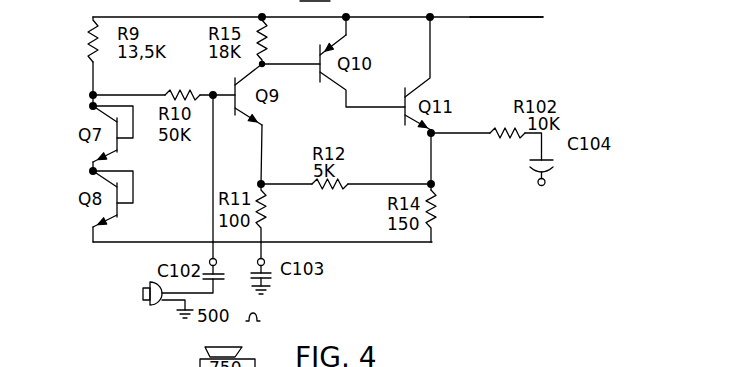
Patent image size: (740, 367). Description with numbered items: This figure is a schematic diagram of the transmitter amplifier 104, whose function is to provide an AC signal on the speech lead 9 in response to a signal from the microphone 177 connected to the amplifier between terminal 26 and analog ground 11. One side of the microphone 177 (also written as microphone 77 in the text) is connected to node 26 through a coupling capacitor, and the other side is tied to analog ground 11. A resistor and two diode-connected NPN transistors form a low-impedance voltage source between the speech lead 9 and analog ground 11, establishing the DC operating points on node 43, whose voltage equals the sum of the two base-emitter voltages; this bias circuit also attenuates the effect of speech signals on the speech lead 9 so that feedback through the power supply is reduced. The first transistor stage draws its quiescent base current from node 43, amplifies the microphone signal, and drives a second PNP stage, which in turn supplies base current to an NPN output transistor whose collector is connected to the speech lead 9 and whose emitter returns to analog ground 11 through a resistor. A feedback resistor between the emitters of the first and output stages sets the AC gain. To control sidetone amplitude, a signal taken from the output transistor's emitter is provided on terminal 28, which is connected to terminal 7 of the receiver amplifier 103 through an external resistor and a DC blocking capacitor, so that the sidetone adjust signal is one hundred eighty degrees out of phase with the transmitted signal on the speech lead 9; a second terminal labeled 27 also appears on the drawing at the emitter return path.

The transmitter amplifier 104 is at (535, 48).
The speech lead 9 is at (483, 17).
The node 43 is at (93, 92).
The terminal 28 is at (432, 134).
The terminal 7 is at (546, 184).
The analog ground 11 is at (352, 243).
The terminal 26 is at (202, 253).
The terminal node 27 is at (247, 257).
The microphone 177 is at (151, 304).
The microphone 77 is at (241, 353).
The receiver amplifier 103 is at (637, 360).